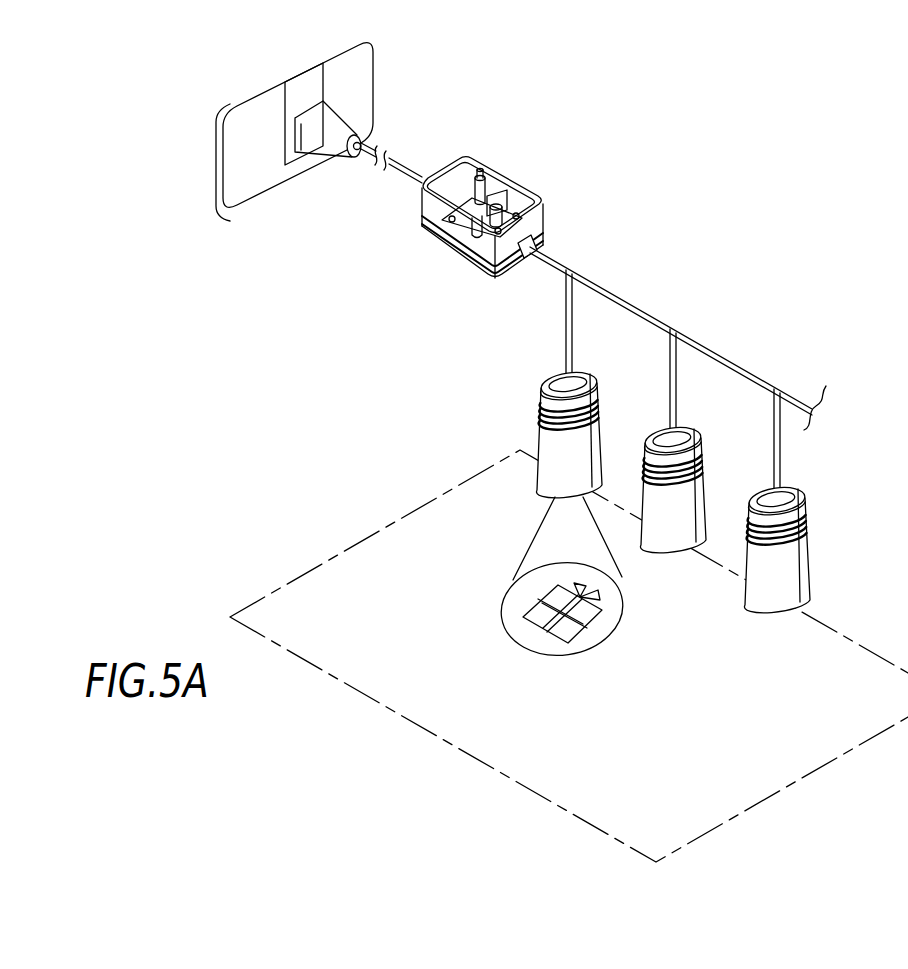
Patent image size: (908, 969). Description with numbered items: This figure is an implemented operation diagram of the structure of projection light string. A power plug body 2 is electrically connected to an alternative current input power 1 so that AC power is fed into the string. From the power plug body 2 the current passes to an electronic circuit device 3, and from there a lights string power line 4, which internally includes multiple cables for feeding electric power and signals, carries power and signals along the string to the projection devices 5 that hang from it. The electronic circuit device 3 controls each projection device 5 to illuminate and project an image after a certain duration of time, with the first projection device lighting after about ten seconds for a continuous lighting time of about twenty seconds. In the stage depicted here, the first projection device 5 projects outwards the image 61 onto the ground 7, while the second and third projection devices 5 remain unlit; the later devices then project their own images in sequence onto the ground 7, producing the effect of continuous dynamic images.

The alternative current (AC) input power 1 is at (218, 183).
The power plug body 2 is at (313, 157).
The electronic circuit device 3 is at (424, 238).
The lights string power line 4 is at (537, 267).
The projection device 5 is at (540, 440).
The image 61 is at (518, 584).
The ground 7 is at (342, 553).